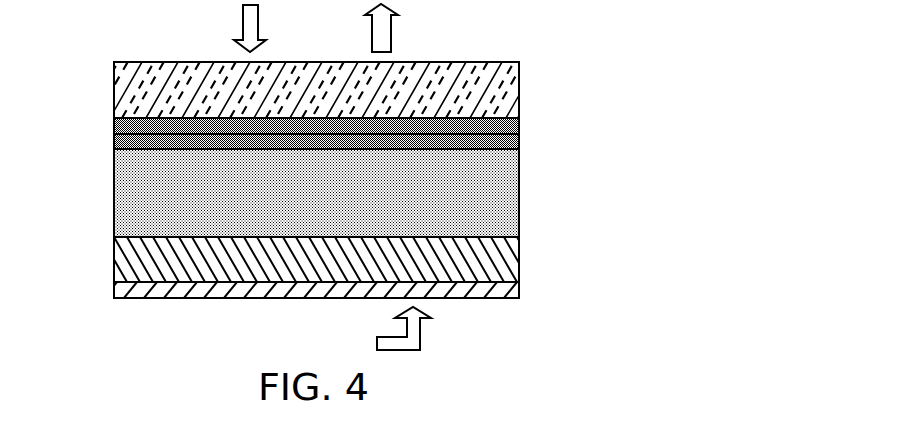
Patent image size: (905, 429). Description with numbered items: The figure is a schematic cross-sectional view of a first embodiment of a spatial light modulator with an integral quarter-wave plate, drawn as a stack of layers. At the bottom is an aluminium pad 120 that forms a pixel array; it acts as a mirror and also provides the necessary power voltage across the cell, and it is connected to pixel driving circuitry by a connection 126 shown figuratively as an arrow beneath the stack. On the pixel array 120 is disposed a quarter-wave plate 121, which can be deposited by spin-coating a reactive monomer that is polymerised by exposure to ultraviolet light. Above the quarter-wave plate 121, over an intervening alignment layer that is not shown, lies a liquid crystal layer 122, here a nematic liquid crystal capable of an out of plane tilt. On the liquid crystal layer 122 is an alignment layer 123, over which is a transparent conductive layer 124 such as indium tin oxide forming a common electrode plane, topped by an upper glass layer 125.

The aluminium pad 120 is at (114, 288).
The quarter-wave plate 121 is at (519, 264).
The liquid crystal layer 122 is at (519, 193).
The alignment layer 123 is at (519, 139).
The transparent conductive layer 124 is at (114, 121).
The upper glass layer 125 is at (519, 76).
The connection 126 is at (377, 339).